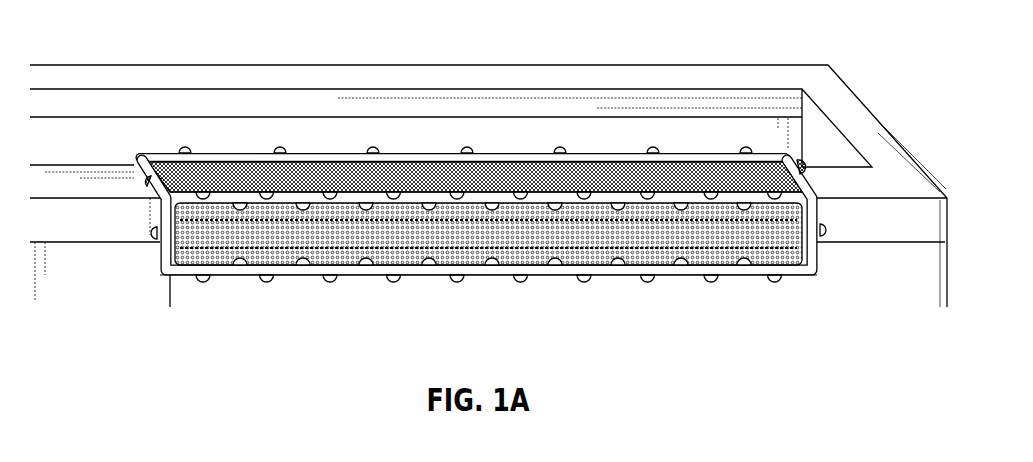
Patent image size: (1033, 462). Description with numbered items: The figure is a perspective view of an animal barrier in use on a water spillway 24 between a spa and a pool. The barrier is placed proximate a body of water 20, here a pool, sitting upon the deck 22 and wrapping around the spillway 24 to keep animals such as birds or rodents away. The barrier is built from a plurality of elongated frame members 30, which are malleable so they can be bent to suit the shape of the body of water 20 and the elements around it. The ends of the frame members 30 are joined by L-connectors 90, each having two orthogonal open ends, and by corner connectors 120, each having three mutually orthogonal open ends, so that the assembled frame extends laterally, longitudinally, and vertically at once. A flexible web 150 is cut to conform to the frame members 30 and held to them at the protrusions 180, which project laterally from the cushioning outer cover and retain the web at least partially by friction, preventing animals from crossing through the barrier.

The body of water 20 is at (483, 189).
The deck 22 is at (60, 178).
The spillway 24 is at (772, 221).
The elongated frame member 30 is at (237, 153).
The L-connector 90 is at (168, 272).
The corner connector 120 is at (157, 199).
The flexible web 150 is at (318, 156).
The protrusions 180 is at (463, 150).